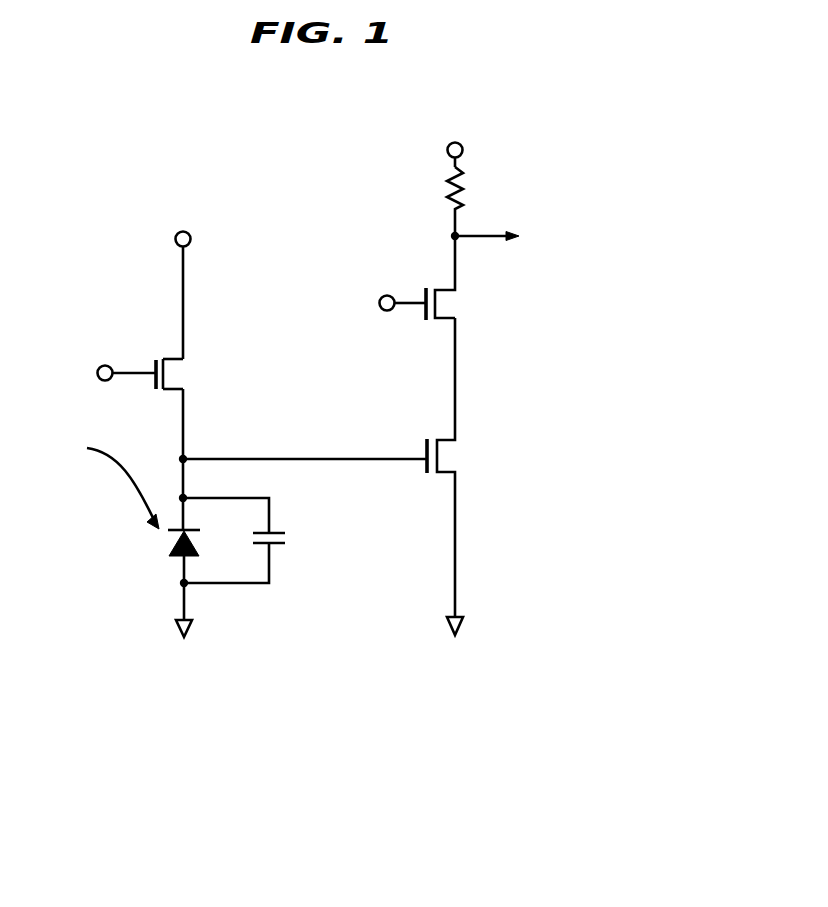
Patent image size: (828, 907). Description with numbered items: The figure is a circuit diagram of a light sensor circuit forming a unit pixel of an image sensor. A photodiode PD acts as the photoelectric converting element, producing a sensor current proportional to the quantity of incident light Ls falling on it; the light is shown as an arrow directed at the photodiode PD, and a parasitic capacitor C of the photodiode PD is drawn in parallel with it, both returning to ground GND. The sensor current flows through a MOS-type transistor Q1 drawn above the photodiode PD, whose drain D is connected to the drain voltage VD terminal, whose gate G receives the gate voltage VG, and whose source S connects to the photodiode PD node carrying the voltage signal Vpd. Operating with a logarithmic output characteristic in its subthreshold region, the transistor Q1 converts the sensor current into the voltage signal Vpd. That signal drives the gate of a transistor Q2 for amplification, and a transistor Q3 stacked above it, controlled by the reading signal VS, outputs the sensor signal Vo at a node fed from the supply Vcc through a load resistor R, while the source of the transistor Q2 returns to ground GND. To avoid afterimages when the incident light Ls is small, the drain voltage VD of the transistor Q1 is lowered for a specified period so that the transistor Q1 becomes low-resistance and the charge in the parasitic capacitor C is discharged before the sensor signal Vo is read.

The transistor Q1 is at (178, 373).
The transistor Q2 is at (427, 467).
The transistor Q3 is at (429, 278).
The photodiode PD is at (163, 523).
The parasitic capacitor C is at (248, 540).
The load resistor R is at (465, 201).
The incident light Ls is at (104, 476).
The drain voltage VD is at (181, 275).
The gate voltage VG is at (107, 372).
The reading signal VS is at (383, 302).
The supply voltage terminal Vcc is at (454, 137).
The sensor signal Vo is at (502, 235).
The voltage signal Vpd is at (303, 426).
The ground GND is at (322, 631).
The drain of Q1 D is at (169, 340).
The gate of Q1 G is at (144, 384).
The source of Q1 S is at (169, 407).